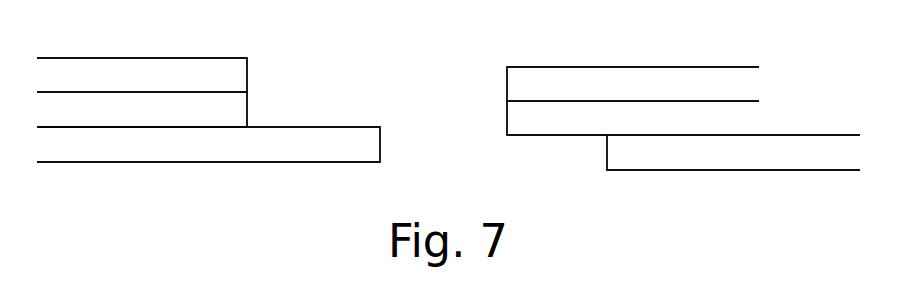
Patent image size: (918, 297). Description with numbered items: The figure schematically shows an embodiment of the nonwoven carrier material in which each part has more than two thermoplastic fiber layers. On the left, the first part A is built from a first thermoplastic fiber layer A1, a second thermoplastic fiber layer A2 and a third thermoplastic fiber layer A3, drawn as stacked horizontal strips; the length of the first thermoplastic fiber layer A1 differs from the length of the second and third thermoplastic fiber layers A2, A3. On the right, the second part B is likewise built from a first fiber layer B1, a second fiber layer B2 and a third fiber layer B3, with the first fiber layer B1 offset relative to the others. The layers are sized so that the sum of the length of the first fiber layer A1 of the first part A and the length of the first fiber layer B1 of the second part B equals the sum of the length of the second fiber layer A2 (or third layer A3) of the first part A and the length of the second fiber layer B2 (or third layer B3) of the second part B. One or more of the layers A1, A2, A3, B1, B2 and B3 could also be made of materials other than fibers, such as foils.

The first part A is at (208, 90).
The first thermoplastic fiber layer A1 is at (208, 144).
The second thermoplastic fiber layer A2 is at (142, 109).
The third thermoplastic fiber layer A3 is at (142, 75).
The second part B is at (683, 101).
The first fiber layer B1 is at (733, 152).
The second fiber layer B2 is at (683, 118).
The third fiber layer B3 is at (633, 84).